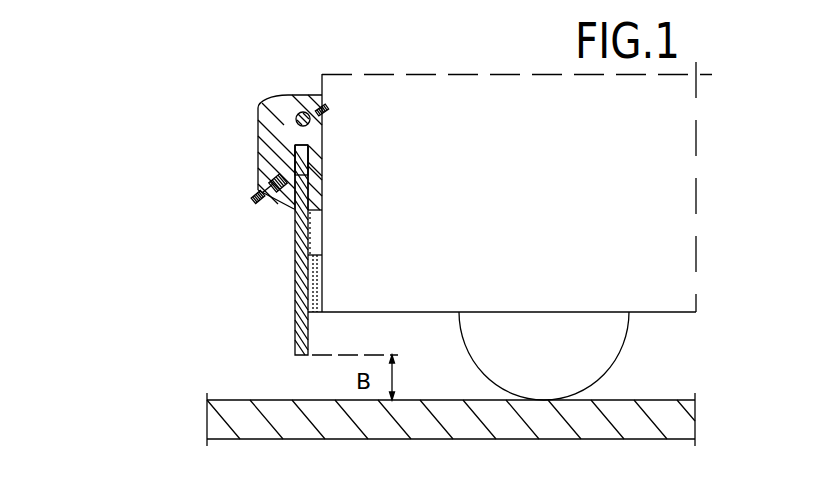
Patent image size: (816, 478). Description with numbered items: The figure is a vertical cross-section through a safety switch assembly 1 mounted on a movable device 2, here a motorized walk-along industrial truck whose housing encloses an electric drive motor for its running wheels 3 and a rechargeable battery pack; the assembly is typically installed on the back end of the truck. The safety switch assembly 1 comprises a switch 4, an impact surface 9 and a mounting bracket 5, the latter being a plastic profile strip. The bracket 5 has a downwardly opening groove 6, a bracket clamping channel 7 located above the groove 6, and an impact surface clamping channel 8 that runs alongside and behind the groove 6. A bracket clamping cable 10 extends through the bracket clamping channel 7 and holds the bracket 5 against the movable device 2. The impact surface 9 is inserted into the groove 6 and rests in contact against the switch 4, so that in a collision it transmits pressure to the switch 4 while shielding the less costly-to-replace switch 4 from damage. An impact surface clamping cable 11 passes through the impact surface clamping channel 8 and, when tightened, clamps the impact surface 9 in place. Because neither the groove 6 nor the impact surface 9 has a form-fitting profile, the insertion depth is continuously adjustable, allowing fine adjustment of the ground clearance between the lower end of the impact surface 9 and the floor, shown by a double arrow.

The safety switch assembly 1 is at (100, 173).
The movable device 2 is at (510, 187).
The running wheels 3 is at (600, 342).
The switch 4 is at (313, 290).
The mounting bracket 5 is at (272, 145).
The groove 6 is at (305, 152).
The bracket clamping channel 7 is at (323, 112).
The impact surface clamping channel 8 is at (252, 203).
The impact surface 9 is at (300, 262).
The bracket clamping cable 10 is at (301, 113).
The impact surface clamping cable 11 is at (268, 180).